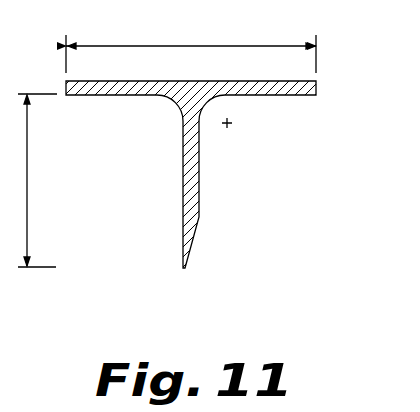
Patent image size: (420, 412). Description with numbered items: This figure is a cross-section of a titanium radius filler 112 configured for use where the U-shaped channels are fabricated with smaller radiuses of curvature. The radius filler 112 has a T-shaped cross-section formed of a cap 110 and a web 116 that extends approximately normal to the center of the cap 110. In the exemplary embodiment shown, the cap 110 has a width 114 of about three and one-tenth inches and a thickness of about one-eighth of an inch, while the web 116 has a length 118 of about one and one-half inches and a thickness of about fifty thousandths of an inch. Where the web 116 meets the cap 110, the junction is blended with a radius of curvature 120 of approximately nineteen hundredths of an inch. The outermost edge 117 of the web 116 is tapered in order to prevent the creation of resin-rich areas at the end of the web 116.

The cap 110 is at (317, 92).
The radius filler 112 is at (275, 247).
The width 114 is at (172, 46).
The web 116 is at (199, 186).
The outermost edge 117 is at (183, 234).
The length 118 is at (27, 193).
The radius of curvature 120 is at (208, 103).